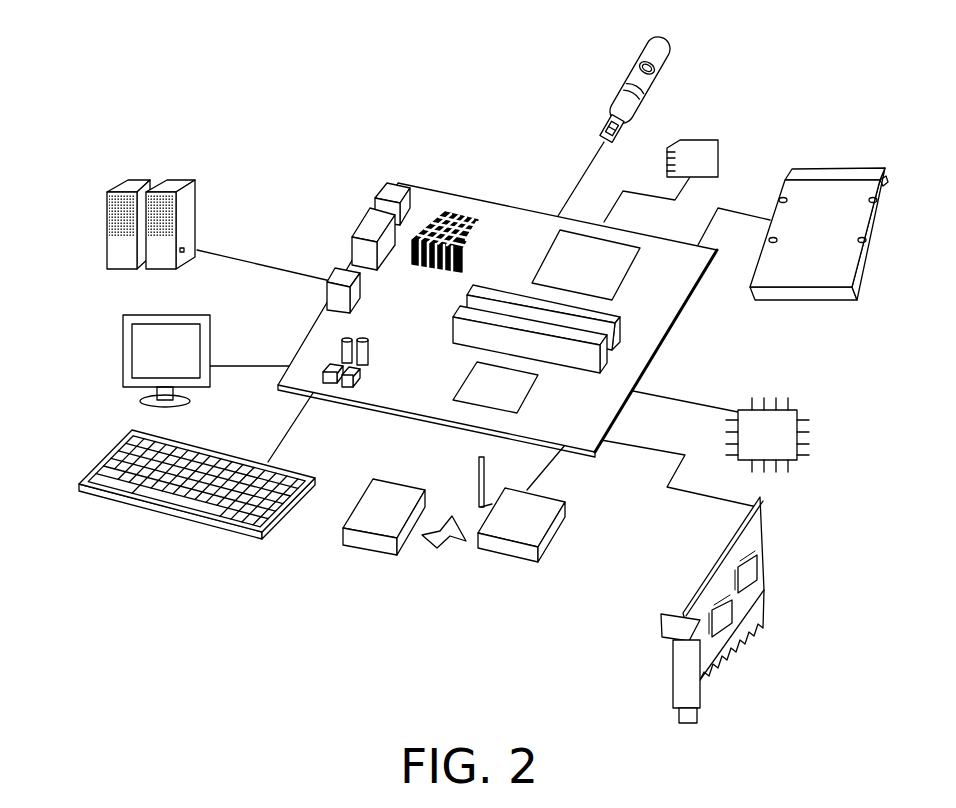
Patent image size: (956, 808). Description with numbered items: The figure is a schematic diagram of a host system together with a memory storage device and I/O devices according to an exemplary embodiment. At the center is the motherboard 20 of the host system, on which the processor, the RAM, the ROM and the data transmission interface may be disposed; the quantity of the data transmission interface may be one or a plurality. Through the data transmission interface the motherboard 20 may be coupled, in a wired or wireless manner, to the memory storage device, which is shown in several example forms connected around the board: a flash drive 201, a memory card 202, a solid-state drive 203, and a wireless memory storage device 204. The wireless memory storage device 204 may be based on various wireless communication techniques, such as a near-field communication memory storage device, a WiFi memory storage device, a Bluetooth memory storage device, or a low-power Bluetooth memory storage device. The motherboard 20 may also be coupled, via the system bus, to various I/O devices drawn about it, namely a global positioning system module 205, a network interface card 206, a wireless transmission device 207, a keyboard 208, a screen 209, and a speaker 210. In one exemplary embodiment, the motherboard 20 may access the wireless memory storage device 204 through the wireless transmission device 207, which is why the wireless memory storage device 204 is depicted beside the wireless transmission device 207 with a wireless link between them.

The motherboard 20 is at (499, 223).
The flash drive 201 is at (622, 76).
The memory card 202 is at (720, 148).
The solid-state drive 203 is at (842, 165).
The wireless memory storage device 204 is at (357, 492).
The global positioning system module 205 is at (806, 436).
The network interface card 206 is at (765, 555).
The wireless transmission device 207 is at (557, 538).
The keyboard 208 is at (200, 520).
The screen 209 is at (122, 367).
The speaker 210 is at (105, 250).